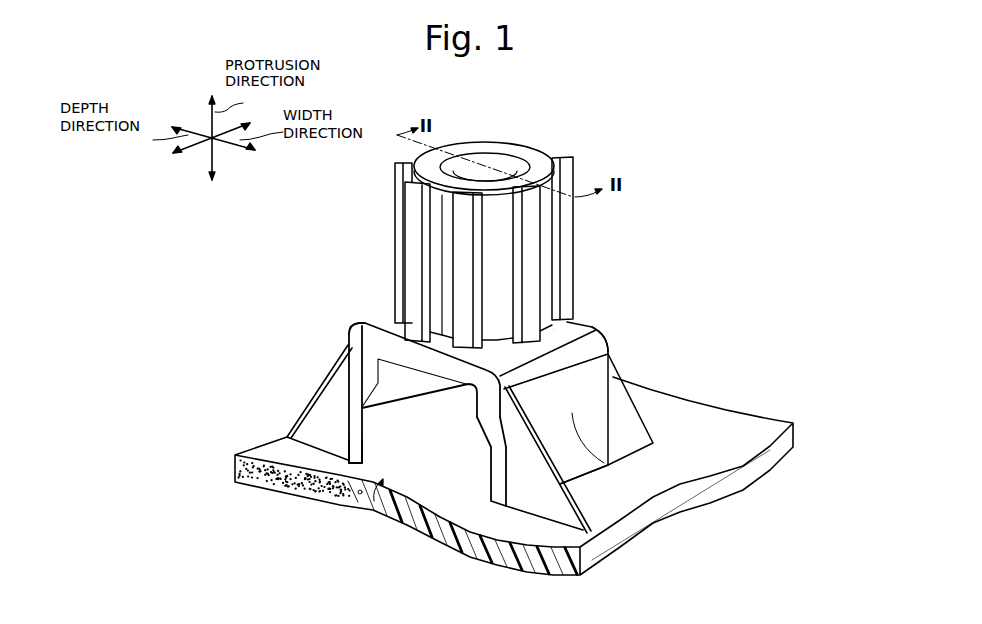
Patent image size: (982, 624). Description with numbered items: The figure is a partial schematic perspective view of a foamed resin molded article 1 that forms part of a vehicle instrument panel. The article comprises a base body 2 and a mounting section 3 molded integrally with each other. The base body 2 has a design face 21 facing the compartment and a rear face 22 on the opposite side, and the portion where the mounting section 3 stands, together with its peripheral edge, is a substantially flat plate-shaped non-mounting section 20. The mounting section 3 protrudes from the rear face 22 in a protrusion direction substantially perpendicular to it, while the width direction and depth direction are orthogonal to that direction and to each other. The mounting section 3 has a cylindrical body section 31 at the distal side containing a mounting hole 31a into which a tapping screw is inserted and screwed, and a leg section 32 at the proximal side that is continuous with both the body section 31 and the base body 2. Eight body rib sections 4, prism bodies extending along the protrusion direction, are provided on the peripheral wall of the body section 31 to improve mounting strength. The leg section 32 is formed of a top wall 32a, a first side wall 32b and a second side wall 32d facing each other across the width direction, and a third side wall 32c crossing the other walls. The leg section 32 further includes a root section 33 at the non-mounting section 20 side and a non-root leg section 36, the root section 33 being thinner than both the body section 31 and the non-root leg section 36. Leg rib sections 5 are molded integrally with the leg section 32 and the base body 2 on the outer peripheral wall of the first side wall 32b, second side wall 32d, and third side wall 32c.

The foamed resin molded article 1 is at (238, 263).
The base body 2 is at (514, 475).
The mounting section 3 is at (806, 222).
The body rib section 4 is at (395, 192).
The leg rib section 5 is at (326, 403).
The non-mounting section 20 is at (356, 503).
The design face 21 is at (432, 538).
The rear face 22 is at (428, 495).
The body section 31 is at (446, 227).
The mounting hole 31a is at (480, 167).
The leg section 32 is at (524, 422).
The top wall 32a is at (550, 333).
The first side wall 32b is at (608, 468).
The third side wall 32c is at (610, 350).
The second side wall 32d is at (347, 349).
The root section 33 is at (355, 448).
The non-root leg section 36 is at (397, 353).